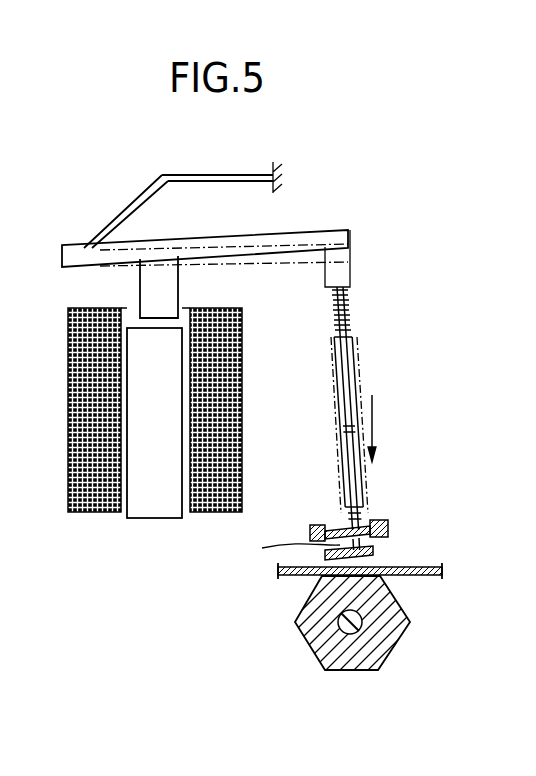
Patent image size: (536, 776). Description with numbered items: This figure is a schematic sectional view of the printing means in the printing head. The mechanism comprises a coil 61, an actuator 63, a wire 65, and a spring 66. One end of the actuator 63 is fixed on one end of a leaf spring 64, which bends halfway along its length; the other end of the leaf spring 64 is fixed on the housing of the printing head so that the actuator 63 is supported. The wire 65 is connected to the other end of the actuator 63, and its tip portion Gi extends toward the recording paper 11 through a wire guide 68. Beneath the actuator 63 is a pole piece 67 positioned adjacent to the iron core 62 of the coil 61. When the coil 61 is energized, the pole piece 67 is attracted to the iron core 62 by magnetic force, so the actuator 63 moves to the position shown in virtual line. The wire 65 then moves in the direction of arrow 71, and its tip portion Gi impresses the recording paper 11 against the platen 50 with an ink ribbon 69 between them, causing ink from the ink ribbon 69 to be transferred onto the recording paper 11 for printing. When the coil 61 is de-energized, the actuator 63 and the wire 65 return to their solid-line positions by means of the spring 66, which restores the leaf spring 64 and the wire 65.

The actuator 63 is at (278, 232).
The leaf spring 64 is at (178, 170).
The pole piece 67 is at (140, 292).
The coil 61 is at (100, 512).
The iron core 62 is at (172, 518).
The spring 66 is at (347, 312).
The wire 65 is at (347, 365).
The arrow 71 is at (373, 423).
The wire guide 68 is at (392, 527).
The ink ribbon 69 is at (380, 544).
The tip portion Gi is at (288, 548).
The recording paper 11 is at (430, 576).
The platen 50 is at (390, 638).